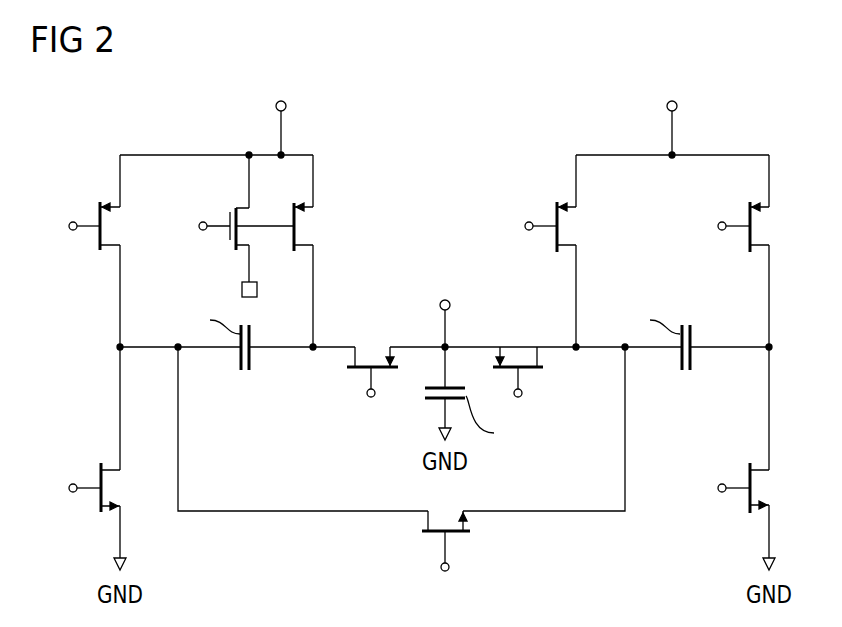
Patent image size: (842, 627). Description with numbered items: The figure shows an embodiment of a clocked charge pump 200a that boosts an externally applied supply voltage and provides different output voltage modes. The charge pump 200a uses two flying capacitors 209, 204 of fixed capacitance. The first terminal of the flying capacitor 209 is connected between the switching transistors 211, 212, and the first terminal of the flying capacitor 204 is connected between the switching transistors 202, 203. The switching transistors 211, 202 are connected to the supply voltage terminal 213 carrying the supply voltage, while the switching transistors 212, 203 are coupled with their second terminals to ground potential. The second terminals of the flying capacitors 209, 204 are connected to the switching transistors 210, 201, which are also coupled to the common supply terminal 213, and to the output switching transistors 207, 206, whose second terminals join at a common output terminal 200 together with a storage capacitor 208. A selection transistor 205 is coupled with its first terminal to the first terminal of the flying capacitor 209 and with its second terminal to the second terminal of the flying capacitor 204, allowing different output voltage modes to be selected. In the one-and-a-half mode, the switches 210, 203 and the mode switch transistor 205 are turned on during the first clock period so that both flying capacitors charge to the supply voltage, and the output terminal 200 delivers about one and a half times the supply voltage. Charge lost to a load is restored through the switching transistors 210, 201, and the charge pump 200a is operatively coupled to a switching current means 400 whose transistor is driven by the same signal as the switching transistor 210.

The output terminal 200 is at (451, 306).
The clocked charge pump 200a is at (463, 140).
The switching transistor 201 is at (560, 238).
The switching transistor 202 is at (748, 240).
The switching transistor 203 is at (748, 500).
The flying capacitor 204 is at (686, 372).
The selection transistor 205 is at (452, 534).
The output switching transistor 206 is at (540, 368).
The output switching transistor 207 is at (381, 362).
The storage capacitor 208 is at (425, 396).
The flying capacitor 209 is at (245, 372).
The switching transistor 210 is at (298, 236).
The switching transistor 211 is at (99, 238).
The switching transistor 212 is at (100, 500).
The supply voltage terminal 213 is at (287, 107).
The switching current means 400 is at (228, 238).